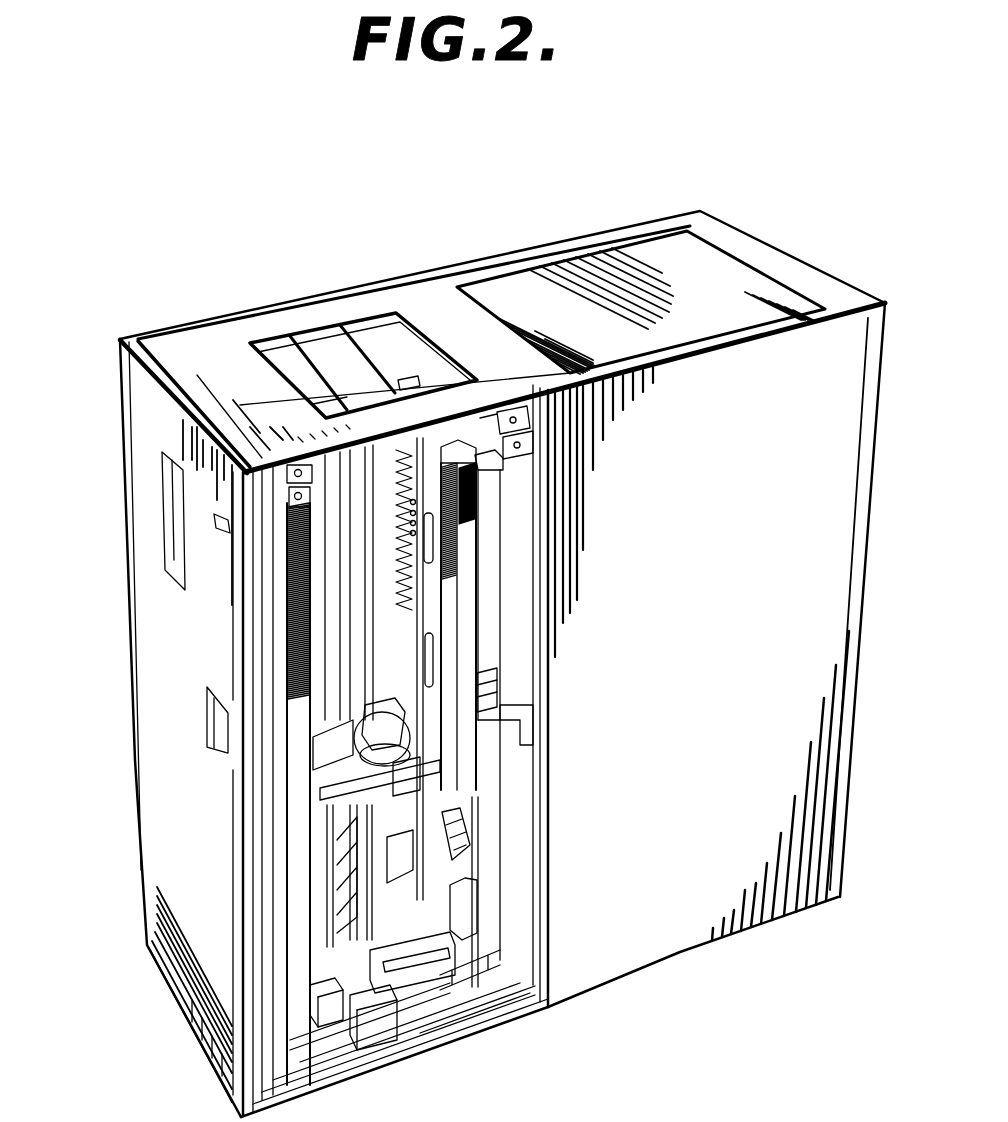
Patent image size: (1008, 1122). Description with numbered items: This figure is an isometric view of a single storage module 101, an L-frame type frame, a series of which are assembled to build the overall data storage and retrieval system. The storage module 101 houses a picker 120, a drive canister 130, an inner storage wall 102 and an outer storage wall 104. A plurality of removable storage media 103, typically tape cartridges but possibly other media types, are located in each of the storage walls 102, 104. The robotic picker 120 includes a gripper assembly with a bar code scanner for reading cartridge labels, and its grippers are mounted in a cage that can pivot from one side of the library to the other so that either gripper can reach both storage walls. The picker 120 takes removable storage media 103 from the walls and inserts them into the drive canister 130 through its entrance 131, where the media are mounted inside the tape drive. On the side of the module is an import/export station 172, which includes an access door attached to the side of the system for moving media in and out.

The storage module 101 is at (227, 337).
The inner storage wall 102 is at (485, 552).
The removable storage media 103 is at (475, 603).
The outer storage wall 104 is at (315, 972).
The picker 120 is at (380, 784).
The drive canister 130 is at (480, 847).
The entrance 131 is at (450, 822).
The import/export station 172 is at (147, 482).